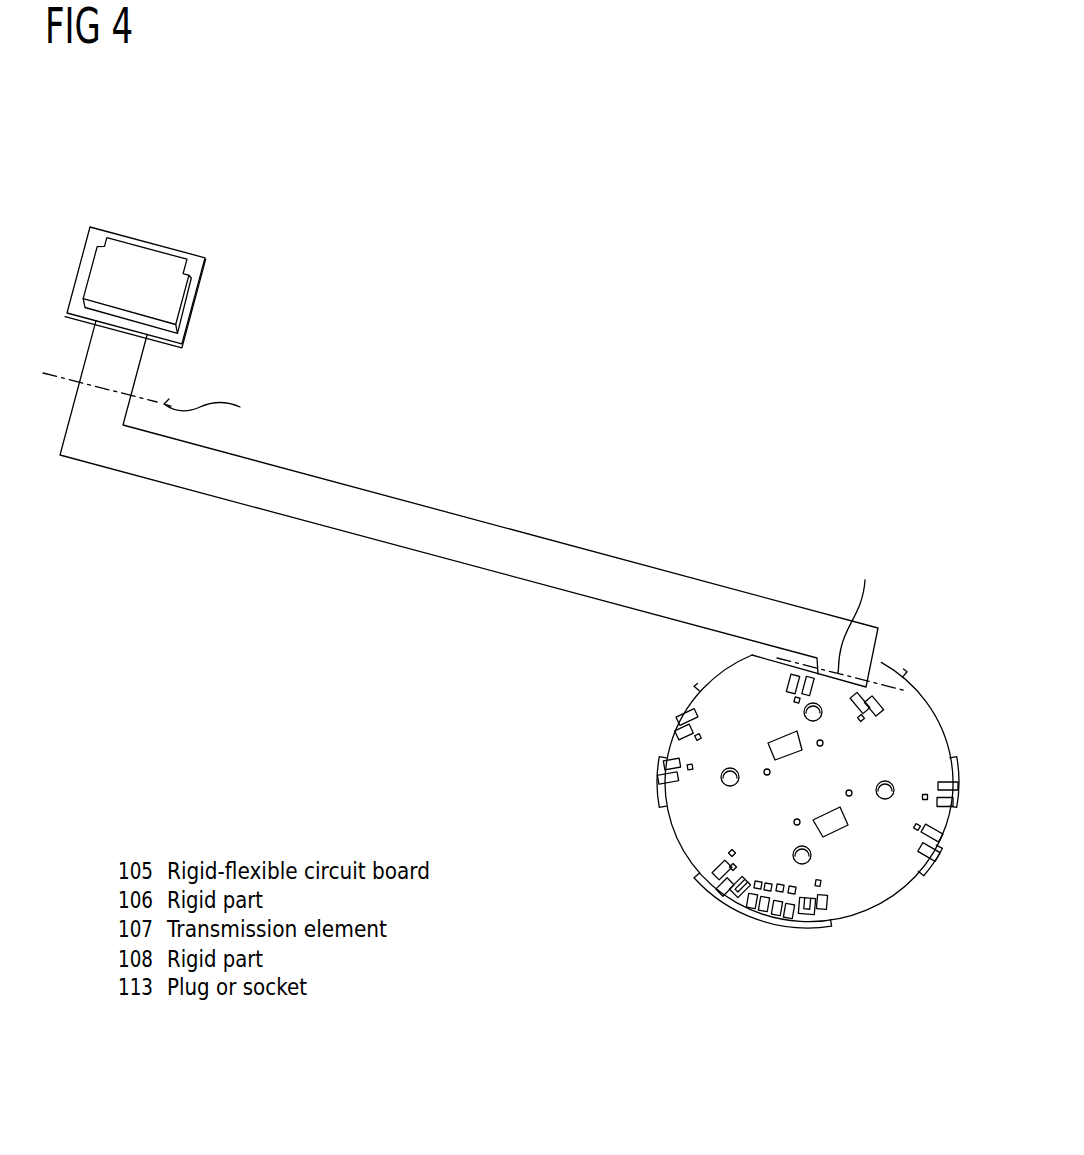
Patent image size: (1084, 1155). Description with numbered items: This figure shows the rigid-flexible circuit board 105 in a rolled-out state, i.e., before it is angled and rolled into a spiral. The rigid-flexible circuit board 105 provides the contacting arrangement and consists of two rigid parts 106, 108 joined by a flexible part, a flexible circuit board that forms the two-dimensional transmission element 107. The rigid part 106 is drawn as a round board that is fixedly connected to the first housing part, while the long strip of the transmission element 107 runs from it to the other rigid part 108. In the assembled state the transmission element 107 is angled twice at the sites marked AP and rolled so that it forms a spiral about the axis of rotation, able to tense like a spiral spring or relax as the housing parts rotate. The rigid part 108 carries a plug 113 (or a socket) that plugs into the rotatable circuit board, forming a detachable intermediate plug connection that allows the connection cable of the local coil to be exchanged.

The rigid-flexible circuit board 105 is at (678, 352).
The rigid part 106 is at (875, 893).
The transmission element 107 is at (422, 520).
The rigid part 108 is at (193, 260).
The plug 113 is at (130, 255).